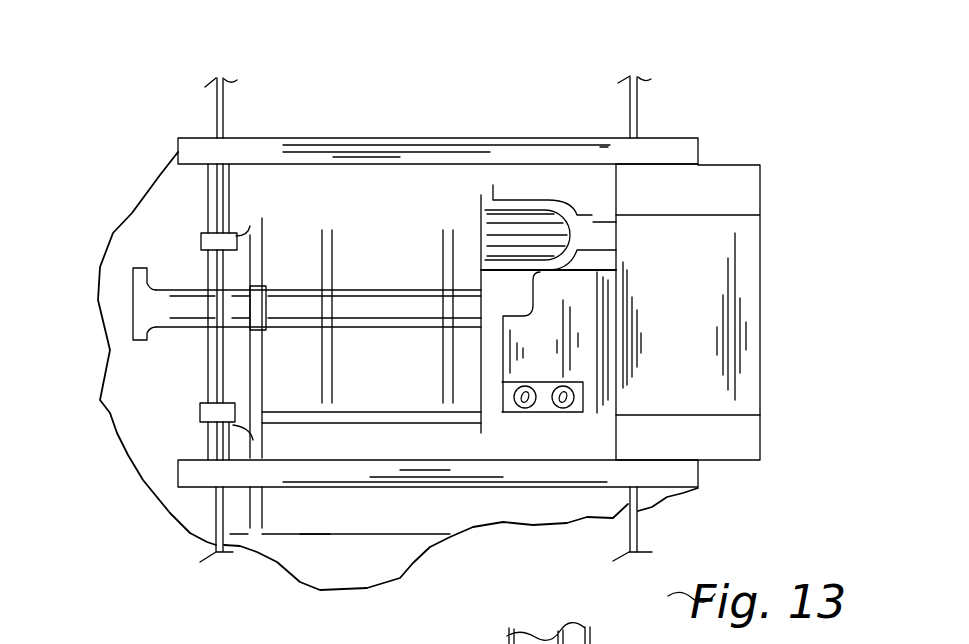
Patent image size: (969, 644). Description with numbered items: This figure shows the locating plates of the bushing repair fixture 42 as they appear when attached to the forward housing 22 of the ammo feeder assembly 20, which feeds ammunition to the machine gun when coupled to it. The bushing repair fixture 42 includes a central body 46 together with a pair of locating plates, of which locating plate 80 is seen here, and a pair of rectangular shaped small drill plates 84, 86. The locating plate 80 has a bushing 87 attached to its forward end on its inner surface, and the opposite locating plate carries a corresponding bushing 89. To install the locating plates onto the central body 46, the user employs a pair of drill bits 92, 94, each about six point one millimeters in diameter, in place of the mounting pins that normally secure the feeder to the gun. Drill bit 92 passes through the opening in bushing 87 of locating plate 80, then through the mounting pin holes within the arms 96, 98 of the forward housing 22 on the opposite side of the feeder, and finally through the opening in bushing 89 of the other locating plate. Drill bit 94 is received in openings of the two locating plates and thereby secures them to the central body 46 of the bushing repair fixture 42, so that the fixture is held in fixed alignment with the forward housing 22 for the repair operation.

The feeder assembly 20 is at (373, 488).
The forward housing 22 is at (252, 589).
The bushing repair fixture 42 is at (392, 98).
The central body 46 is at (698, 301).
The locating plate 80 is at (253, 138).
The small drill plate 84 is at (760, 192).
The small drill plate 86 is at (760, 440).
The bushing 87 is at (208, 187).
The bushing 89 is at (213, 496).
The drill bit 92 is at (213, 110).
The drill bit 94 is at (640, 102).
The arm 96 is at (202, 242).
The arm 98 is at (200, 406).